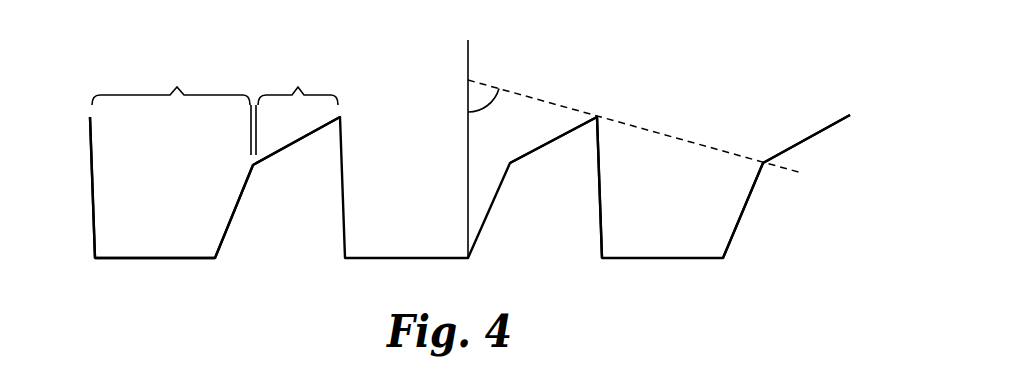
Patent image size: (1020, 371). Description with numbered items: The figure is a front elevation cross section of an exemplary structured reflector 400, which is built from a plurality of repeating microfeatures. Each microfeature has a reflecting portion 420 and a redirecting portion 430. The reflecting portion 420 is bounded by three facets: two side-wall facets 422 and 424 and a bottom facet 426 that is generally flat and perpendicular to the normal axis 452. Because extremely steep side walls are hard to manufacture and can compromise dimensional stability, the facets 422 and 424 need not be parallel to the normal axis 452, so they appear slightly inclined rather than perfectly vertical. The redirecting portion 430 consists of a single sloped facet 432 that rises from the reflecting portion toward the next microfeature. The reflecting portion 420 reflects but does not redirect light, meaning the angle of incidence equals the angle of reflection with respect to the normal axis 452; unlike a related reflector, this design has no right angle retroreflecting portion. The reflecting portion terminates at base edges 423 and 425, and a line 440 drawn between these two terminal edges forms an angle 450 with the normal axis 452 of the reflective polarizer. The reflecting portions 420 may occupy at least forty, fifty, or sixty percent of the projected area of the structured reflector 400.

The structured reflector 400 is at (786, 66).
The reflecting portion 420 is at (171, 81).
The redirecting portion 430 is at (294, 106).
The facet 422 is at (92, 202).
The facet 424 is at (230, 225).
The facet 426 is at (158, 260).
The facet 432 is at (280, 148).
The normal axis 452 is at (470, 56).
The line 440 is at (675, 137).
The angle 450 is at (497, 108).
The base edge 423 is at (592, 118).
The base edge 425 is at (763, 163).